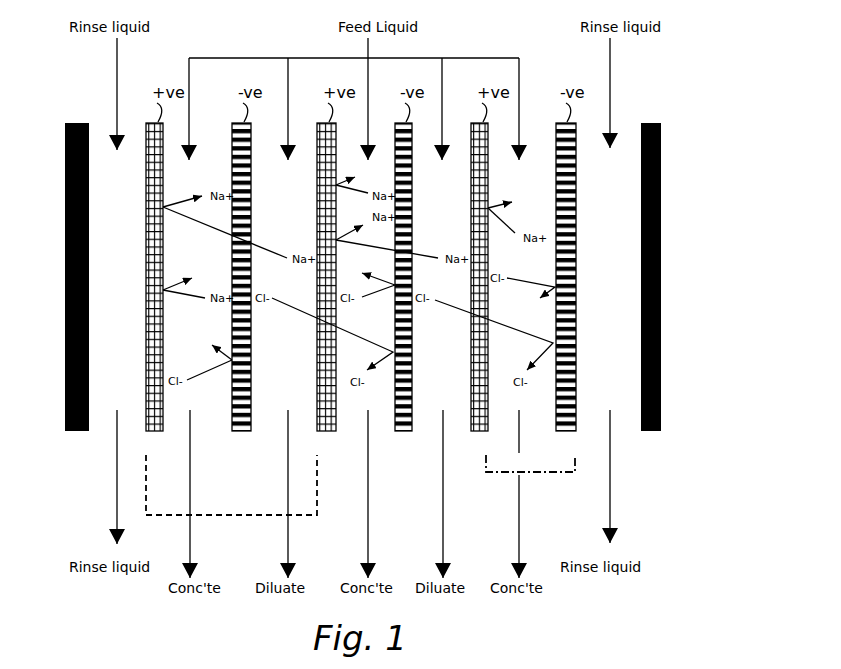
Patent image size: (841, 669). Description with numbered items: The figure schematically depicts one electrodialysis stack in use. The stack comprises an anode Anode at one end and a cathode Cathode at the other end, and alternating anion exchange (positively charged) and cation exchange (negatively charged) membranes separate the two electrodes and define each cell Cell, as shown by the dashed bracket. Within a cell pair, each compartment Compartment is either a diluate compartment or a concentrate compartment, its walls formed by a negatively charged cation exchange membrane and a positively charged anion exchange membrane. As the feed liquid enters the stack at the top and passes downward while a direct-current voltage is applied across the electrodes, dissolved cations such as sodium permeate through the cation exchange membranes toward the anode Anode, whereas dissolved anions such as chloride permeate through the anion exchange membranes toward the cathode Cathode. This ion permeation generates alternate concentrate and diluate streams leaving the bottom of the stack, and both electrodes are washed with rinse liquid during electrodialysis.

The anode Anode is at (65, 267).
The cathode Cathode is at (661, 267).
The cell Cell is at (205, 515).
The compartment Compartment is at (557, 472).